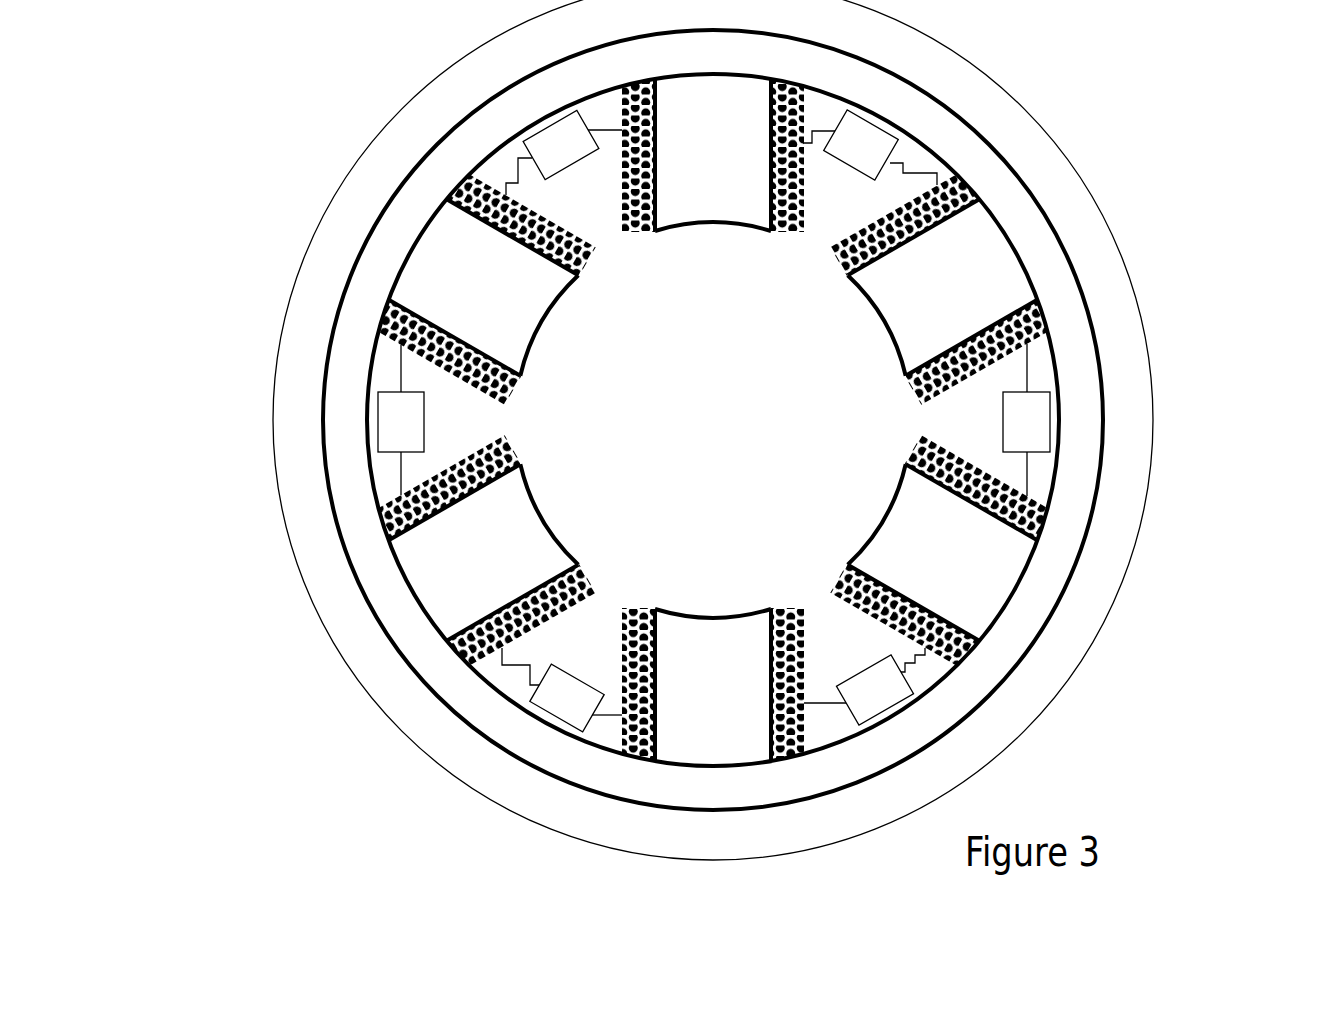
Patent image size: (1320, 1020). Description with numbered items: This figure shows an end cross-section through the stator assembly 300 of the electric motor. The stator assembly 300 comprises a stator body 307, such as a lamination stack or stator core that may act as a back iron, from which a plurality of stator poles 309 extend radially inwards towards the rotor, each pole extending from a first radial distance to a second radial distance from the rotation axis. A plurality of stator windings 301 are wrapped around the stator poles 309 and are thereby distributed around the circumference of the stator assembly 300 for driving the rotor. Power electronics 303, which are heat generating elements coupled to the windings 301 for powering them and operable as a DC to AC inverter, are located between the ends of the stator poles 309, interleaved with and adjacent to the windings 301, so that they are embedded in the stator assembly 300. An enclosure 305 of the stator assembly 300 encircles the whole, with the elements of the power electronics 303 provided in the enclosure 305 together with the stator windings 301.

The stator assembly 300 is at (701, 451).
The stator windings 301 is at (633, 712).
The power electronics 303 is at (547, 693).
The enclosure 305 is at (290, 302).
The stator body 307 is at (846, 788).
The stator poles 309 is at (420, 568).